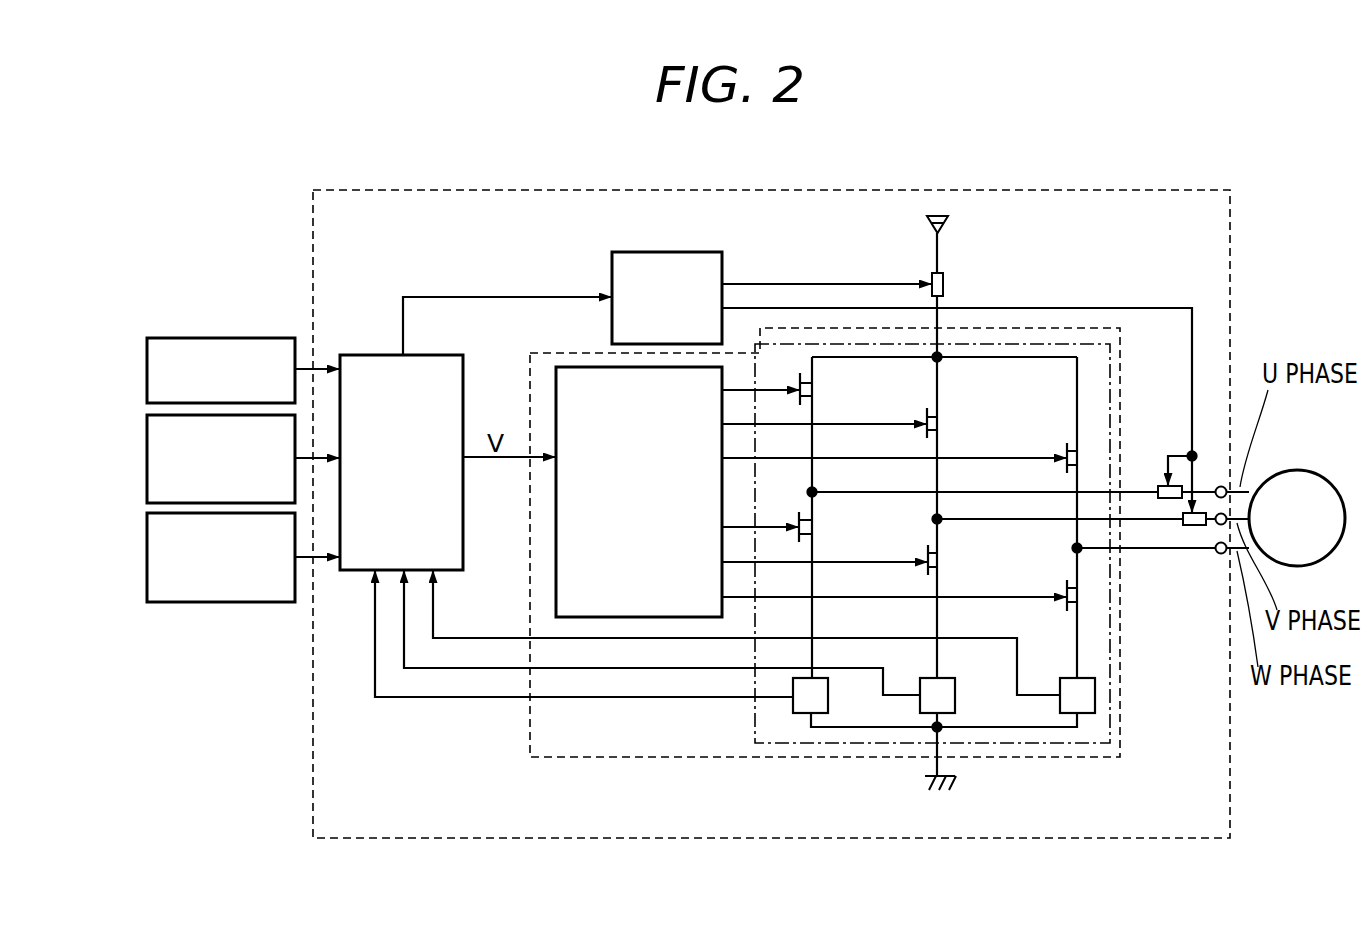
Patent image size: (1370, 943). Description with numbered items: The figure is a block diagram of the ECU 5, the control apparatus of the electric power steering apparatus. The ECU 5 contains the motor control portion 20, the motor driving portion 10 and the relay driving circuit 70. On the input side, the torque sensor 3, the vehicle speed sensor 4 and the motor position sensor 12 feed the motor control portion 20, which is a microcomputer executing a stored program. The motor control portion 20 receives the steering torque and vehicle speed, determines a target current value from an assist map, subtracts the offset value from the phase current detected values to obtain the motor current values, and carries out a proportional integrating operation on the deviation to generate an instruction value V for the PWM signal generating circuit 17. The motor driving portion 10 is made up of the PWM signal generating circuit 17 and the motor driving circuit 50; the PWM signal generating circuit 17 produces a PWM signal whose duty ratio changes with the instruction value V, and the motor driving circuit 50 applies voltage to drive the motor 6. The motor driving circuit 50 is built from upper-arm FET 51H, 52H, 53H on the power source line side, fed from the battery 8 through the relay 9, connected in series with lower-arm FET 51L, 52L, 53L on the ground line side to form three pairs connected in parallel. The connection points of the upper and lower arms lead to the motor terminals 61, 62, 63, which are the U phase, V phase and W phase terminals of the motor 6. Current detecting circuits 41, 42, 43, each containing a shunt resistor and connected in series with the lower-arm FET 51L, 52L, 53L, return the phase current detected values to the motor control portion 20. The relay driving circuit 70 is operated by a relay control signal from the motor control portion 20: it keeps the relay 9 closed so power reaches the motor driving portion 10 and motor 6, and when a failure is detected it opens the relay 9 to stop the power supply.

The torque sensor 3 is at (147, 353).
The vehicle speed sensor 4 is at (147, 440).
The motor position sensor 12 is at (147, 535).
The ECU 5 is at (717, 188).
The motor control portion 20 is at (371, 355).
The relay driving circuit 70 is at (610, 268).
The PWM signal generating circuit 17 is at (556, 390).
The motor driving portion 10 is at (586, 759).
The motor driving circuit 50 is at (1112, 367).
The battery 8 is at (948, 221).
The relay 9 is at (944, 285).
The FET of the upper arm 51H is at (800, 373).
The FET of the upper arm 52H is at (927, 410).
The FET of the upper arm 53H is at (1067, 445).
The FET of the lower arm 51L is at (799, 515).
The FET of the lower arm 52L is at (928, 547).
The FET of the lower arm 53L is at (1067, 580).
The current detecting circuit 41 is at (803, 714).
The current detecting circuit 42 is at (947, 714).
The current detecting circuit 43 is at (1086, 714).
The motor 6 is at (1302, 470).
The motor terminal 61 is at (1222, 486).
The motor terminal 62 is at (1218, 525).
The motor terminal 63 is at (1222, 554).